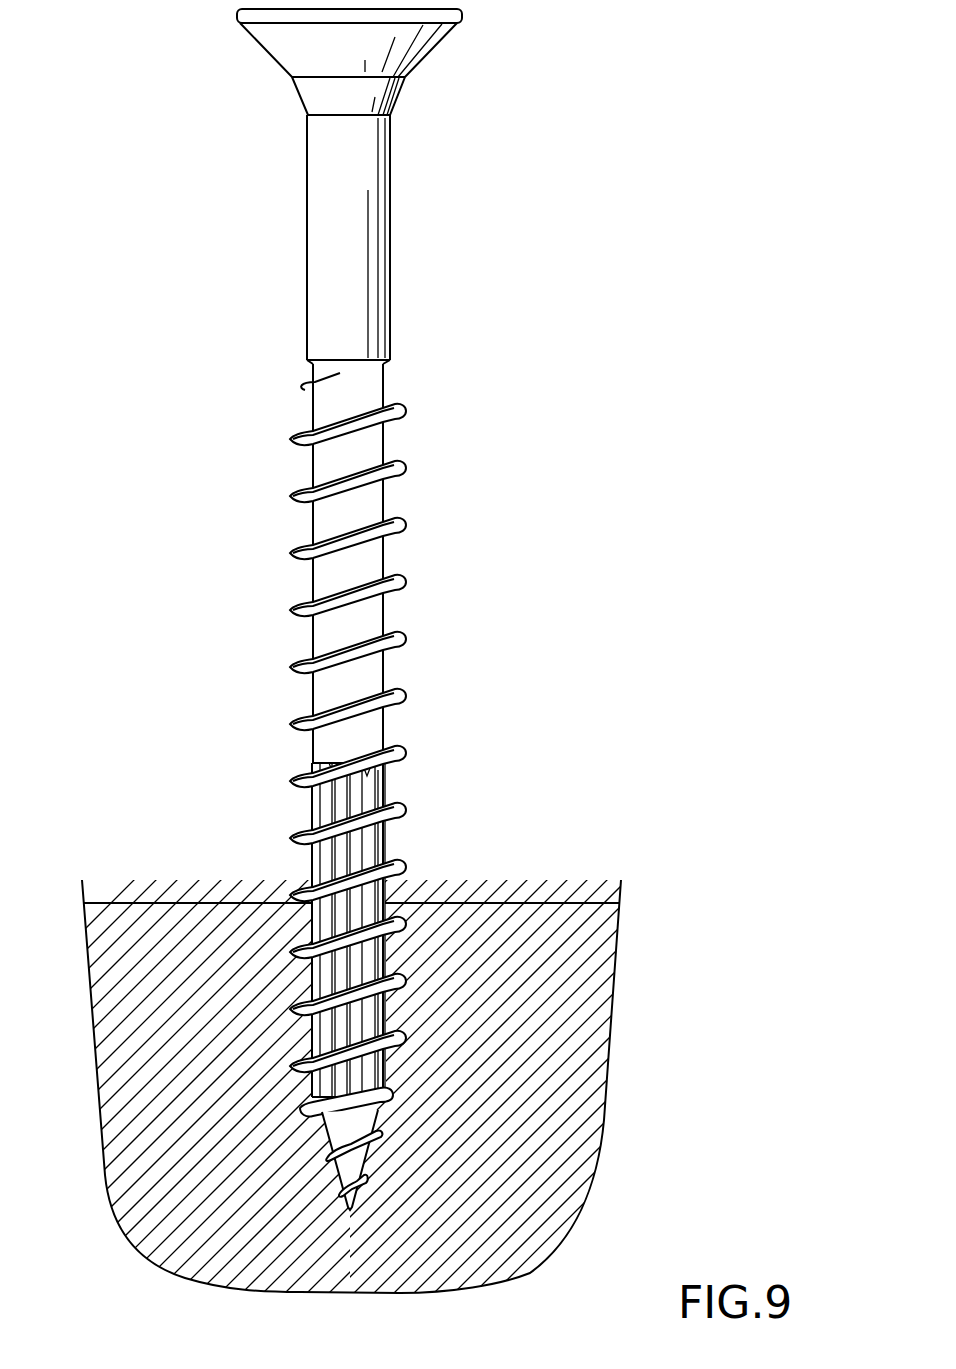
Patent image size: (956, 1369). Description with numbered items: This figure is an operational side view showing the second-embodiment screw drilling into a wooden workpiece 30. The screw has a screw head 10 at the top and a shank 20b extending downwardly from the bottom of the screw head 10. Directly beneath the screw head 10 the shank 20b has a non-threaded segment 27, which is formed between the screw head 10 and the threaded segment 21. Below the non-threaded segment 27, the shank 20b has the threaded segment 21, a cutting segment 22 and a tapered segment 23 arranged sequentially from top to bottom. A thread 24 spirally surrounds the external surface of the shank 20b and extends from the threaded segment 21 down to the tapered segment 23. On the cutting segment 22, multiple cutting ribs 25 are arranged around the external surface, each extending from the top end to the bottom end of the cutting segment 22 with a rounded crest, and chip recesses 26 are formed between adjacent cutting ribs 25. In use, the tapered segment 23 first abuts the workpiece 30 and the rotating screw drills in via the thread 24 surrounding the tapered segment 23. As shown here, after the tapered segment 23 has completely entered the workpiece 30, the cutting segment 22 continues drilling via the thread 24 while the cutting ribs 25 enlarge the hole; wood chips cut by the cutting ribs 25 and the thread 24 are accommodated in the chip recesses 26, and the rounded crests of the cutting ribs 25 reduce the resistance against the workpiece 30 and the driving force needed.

The screw head 10 is at (280, 670).
The non-threaded segment 27 is at (290, 222).
The shank 20b is at (280, 791).
The threaded segment 21 is at (252, 590).
The cutting segment 22 is at (315, 1038).
The tapered segment 23 is at (306, 1177).
The thread 24 is at (397, 803).
The cutting rib 25 is at (395, 880).
The chip recess 26 is at (393, 837).
The workpiece 30 is at (538, 903).